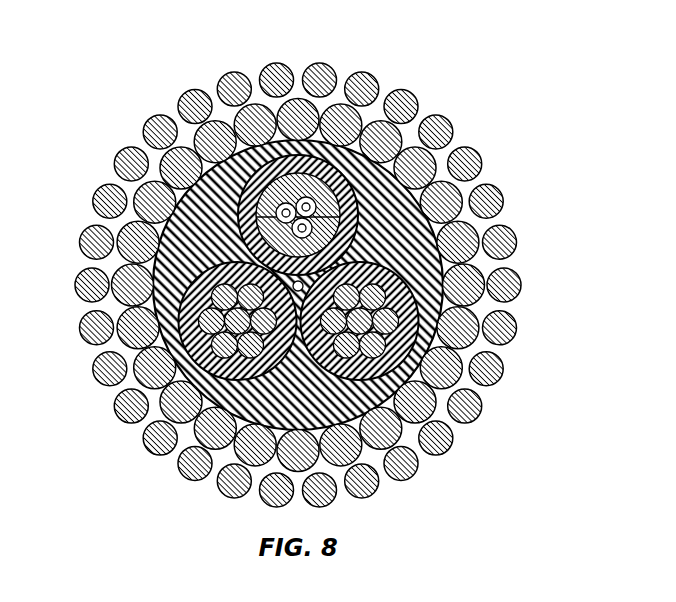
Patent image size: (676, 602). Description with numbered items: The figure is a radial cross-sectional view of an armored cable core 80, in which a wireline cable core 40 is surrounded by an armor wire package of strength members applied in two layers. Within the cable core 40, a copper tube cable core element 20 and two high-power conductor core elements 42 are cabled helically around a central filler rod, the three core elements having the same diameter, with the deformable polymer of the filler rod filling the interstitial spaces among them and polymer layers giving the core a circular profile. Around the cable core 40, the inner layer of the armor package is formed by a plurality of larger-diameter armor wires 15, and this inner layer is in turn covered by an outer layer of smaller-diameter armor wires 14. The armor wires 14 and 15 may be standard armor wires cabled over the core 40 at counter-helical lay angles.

The armored cable core 80 is at (320, 267).
The copper tube cable core element 20 is at (338, 149).
The larger-diameter armor wires 15 is at (153, 203).
The smaller-diameter armor wires 14 is at (506, 286).
The high-power conductor core element 42 is at (404, 270).
The cable core 40 is at (441, 397).